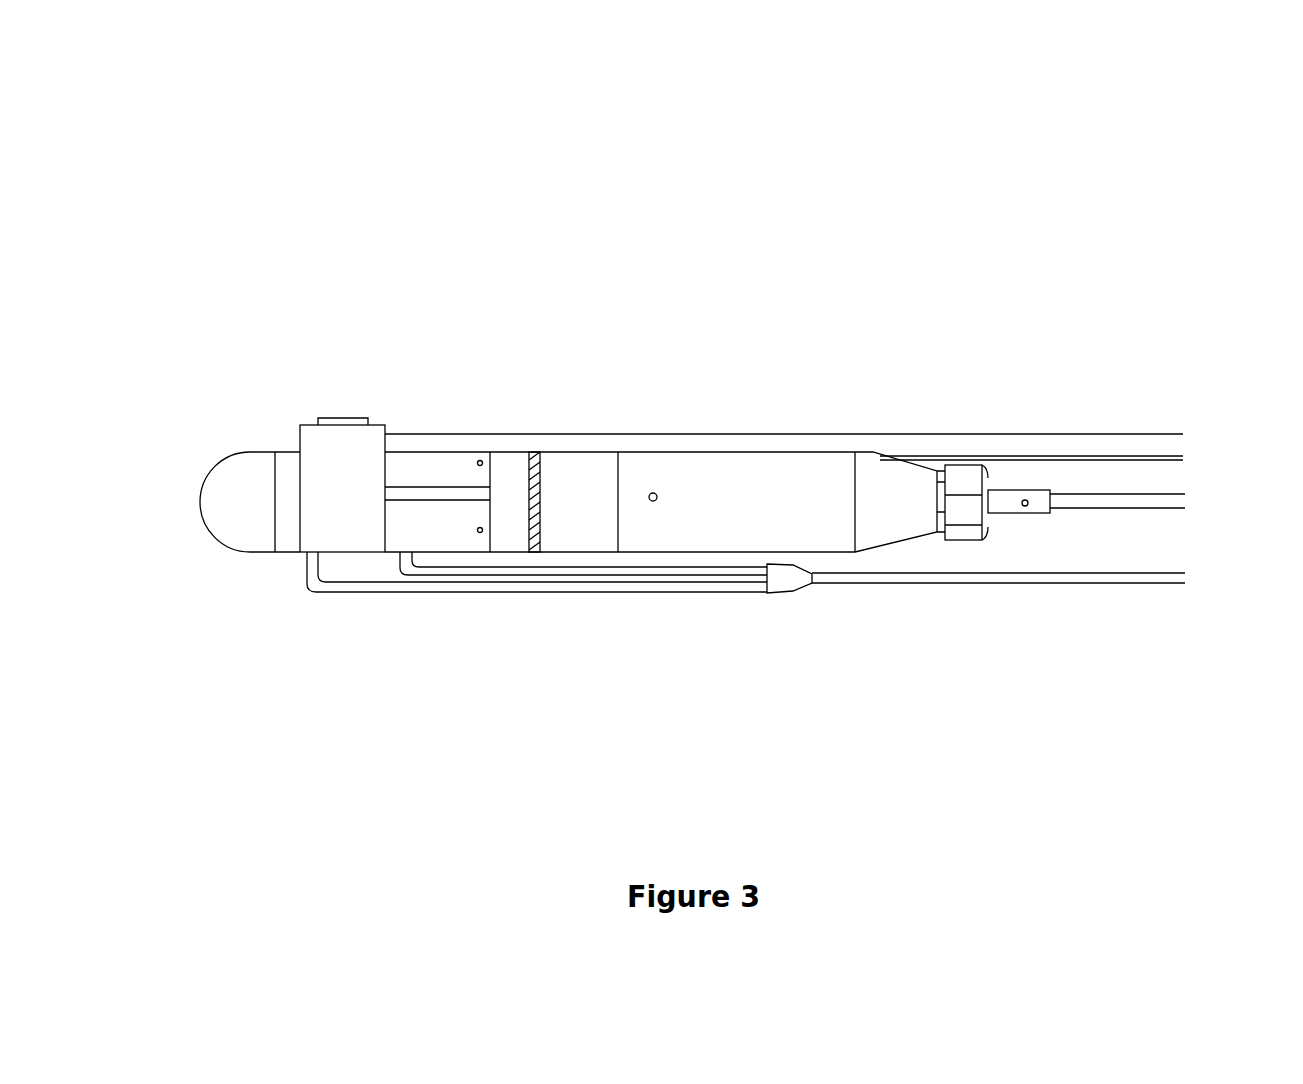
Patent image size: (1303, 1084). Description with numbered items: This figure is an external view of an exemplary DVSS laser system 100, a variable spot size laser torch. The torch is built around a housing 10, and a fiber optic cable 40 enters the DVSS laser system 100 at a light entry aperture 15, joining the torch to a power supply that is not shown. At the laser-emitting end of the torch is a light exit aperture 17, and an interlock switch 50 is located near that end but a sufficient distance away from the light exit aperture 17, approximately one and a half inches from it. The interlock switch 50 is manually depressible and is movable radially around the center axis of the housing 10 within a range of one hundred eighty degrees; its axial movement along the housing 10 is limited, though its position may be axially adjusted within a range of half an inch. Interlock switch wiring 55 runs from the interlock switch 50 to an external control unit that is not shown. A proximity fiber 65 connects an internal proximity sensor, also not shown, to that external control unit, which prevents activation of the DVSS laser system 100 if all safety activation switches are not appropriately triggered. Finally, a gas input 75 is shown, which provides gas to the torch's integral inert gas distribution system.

The DVSS laser system 100 is at (953, 138).
The light exit aperture 17 is at (193, 502).
The interlock switch 50 is at (343, 417).
The housing 10 is at (743, 495).
The interlock switch wiring 55 is at (490, 433).
The proximity fiber 65 is at (1185, 457).
The light entry aperture 15 is at (988, 480).
The fiber optic cable 40 is at (1010, 507).
The gas input 75 is at (892, 583).